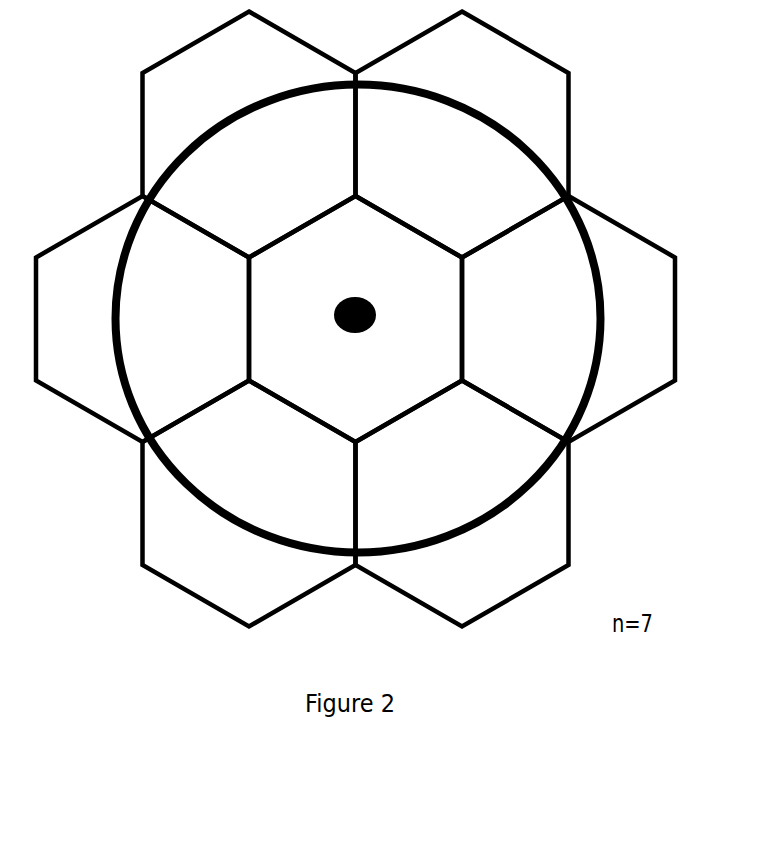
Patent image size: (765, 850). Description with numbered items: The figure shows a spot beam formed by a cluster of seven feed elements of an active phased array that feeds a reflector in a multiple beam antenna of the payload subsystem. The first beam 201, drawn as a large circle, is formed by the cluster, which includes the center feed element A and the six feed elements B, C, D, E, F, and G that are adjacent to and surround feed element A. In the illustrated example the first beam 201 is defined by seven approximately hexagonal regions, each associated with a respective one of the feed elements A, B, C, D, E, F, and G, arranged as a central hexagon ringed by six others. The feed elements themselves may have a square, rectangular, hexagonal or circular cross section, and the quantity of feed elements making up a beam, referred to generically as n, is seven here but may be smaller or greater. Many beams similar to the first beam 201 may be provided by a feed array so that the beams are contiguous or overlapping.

The first beam 201 is at (153, 457).
The center feed element A is at (355, 319).
The feed element B is at (142, 319).
The feed element C is at (249, 135).
The feed element D is at (462, 135).
The feed element E is at (568, 319).
The feed element F is at (462, 504).
The feed element G is at (249, 504).